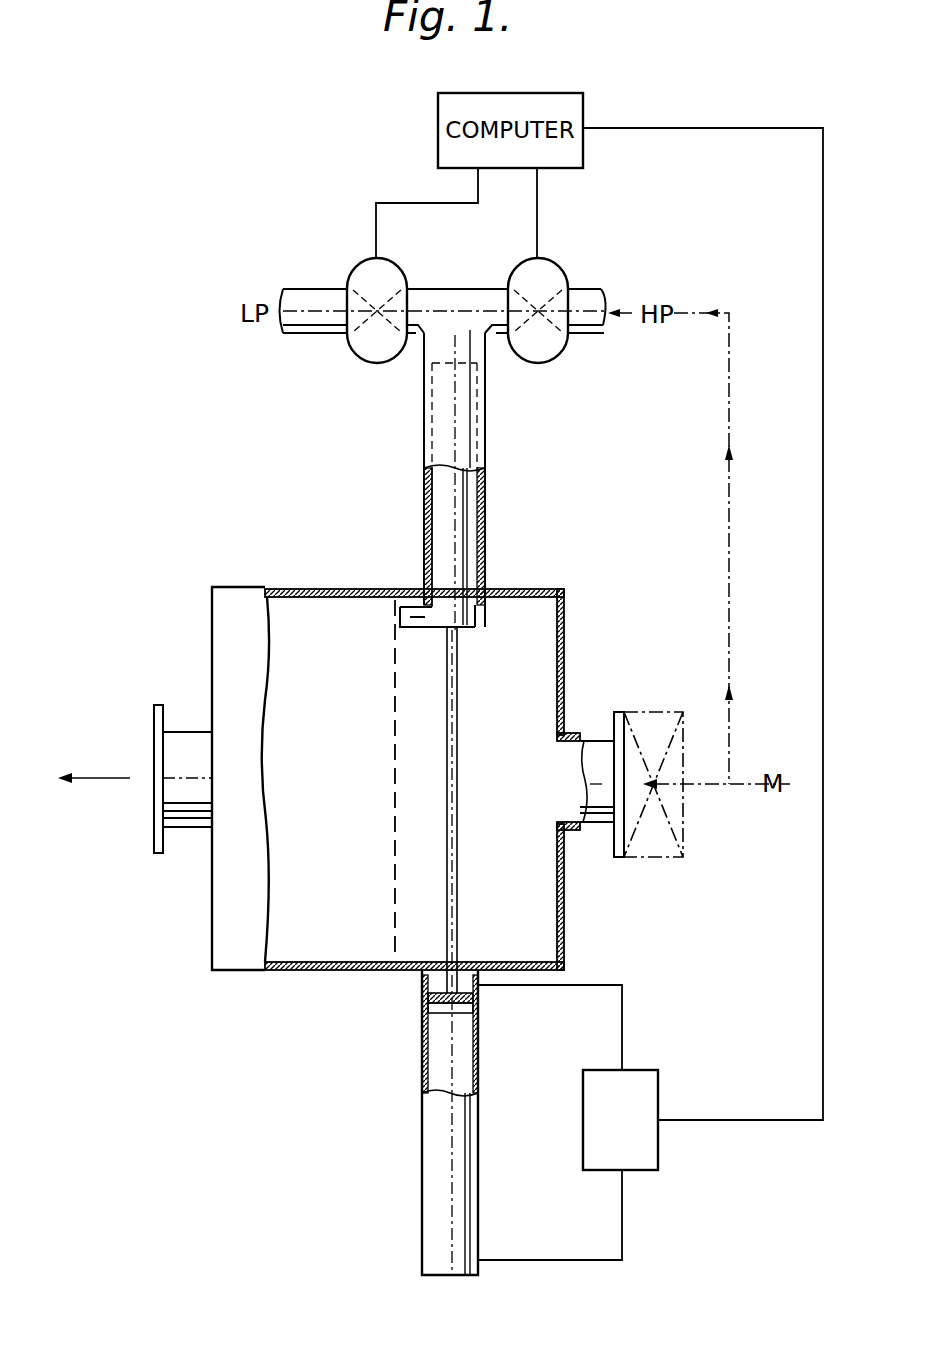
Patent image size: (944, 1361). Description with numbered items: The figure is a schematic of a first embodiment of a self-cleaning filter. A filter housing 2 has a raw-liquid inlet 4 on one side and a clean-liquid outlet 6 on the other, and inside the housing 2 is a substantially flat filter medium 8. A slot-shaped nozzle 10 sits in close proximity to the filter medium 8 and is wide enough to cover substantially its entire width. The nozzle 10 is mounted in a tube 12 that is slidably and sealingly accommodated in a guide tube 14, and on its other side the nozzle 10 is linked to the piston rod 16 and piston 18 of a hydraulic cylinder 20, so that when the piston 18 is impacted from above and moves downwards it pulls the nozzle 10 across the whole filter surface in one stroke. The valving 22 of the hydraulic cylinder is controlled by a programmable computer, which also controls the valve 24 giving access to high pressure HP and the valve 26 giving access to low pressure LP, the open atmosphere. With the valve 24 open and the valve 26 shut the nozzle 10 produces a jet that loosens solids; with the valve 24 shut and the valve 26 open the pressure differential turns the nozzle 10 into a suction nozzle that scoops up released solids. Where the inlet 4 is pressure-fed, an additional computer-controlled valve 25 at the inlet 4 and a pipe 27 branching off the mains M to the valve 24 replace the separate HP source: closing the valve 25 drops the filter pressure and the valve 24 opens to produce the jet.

The filter housing 2 is at (335, 589).
The raw-liquid inlet 4 is at (598, 748).
The clean-liquid outlet 6 is at (190, 752).
The filter medium 8 is at (395, 848).
The nozzle 10 is at (413, 615).
The tube 12 is at (440, 510).
The guide tube 14 is at (485, 503).
The piston rod 16 is at (458, 771).
The piston 18 is at (440, 1015).
The hydraulic cylinder 20 is at (478, 1038).
The valving 22 is at (604, 1138).
The valve 24 is at (540, 282).
The additional valve 25 is at (662, 848).
The valve 26 is at (368, 273).
The pipe 27 is at (728, 546).